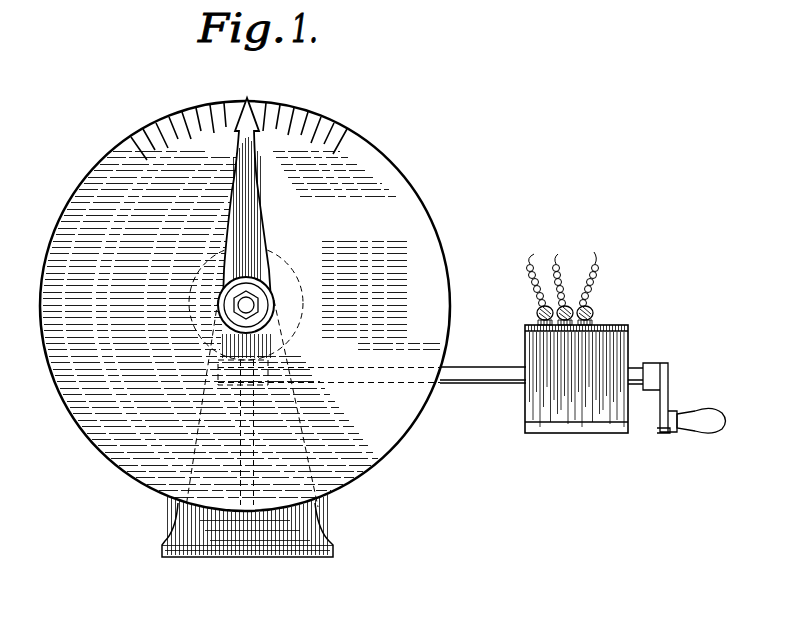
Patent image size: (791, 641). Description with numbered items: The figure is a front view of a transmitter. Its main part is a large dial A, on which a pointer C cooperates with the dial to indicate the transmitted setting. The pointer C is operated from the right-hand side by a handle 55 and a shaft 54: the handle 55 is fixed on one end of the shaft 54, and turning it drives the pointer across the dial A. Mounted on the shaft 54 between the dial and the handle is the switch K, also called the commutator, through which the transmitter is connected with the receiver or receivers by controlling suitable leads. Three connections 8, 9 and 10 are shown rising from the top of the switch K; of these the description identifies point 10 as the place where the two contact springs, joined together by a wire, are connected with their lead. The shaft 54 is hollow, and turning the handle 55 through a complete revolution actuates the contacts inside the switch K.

The dial A is at (245, 306).
The pointer C is at (252, 185).
The shaft 54 is at (499, 381).
The switch K is at (576, 379).
The terminal coil 8 is at (538, 280).
The terminal coil 9 is at (563, 280).
The point 10 is at (592, 280).
The handle 55 is at (698, 412).